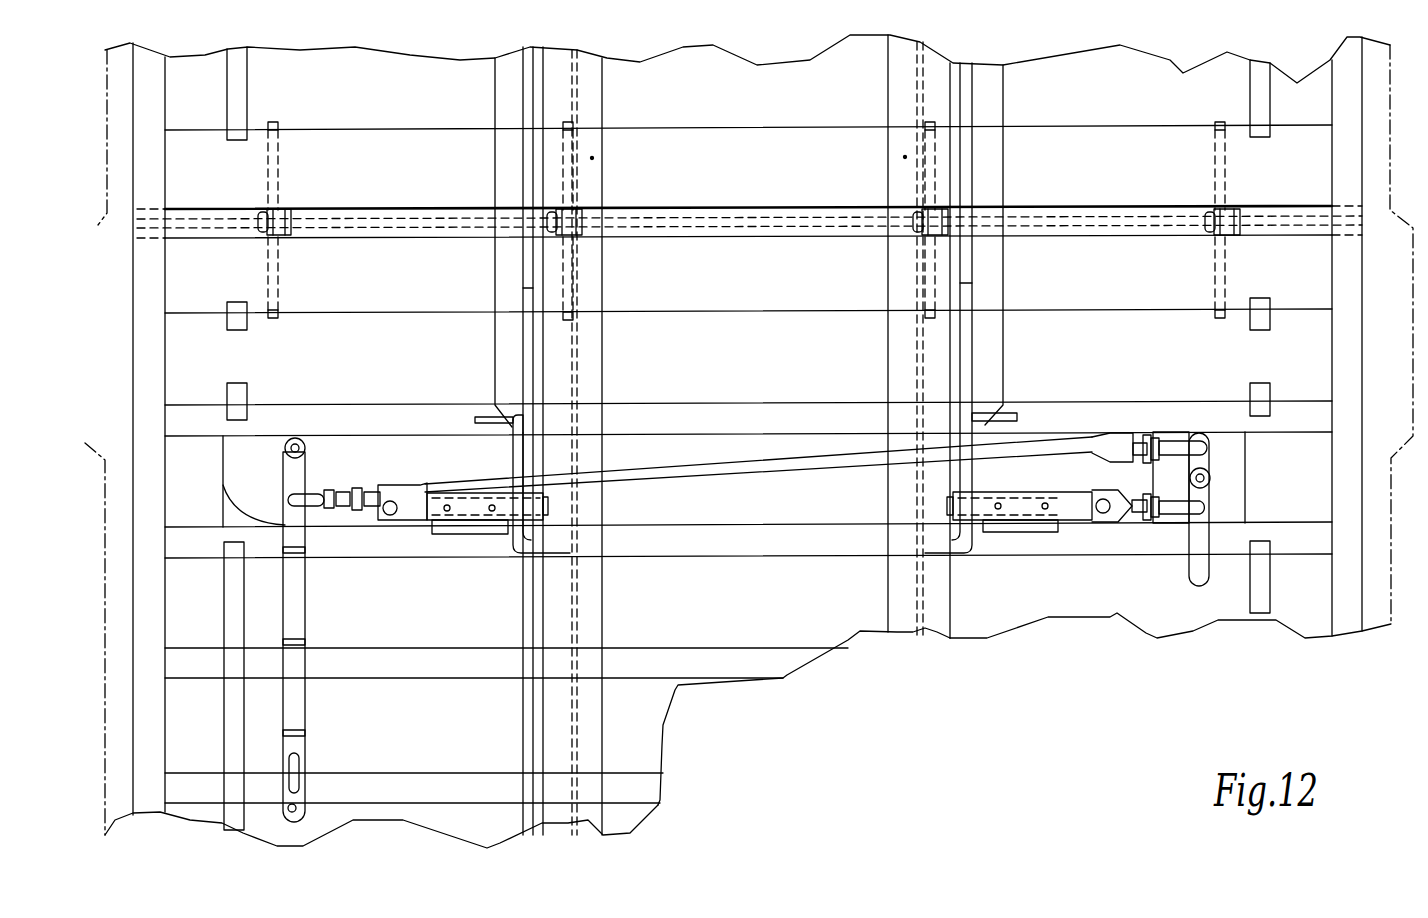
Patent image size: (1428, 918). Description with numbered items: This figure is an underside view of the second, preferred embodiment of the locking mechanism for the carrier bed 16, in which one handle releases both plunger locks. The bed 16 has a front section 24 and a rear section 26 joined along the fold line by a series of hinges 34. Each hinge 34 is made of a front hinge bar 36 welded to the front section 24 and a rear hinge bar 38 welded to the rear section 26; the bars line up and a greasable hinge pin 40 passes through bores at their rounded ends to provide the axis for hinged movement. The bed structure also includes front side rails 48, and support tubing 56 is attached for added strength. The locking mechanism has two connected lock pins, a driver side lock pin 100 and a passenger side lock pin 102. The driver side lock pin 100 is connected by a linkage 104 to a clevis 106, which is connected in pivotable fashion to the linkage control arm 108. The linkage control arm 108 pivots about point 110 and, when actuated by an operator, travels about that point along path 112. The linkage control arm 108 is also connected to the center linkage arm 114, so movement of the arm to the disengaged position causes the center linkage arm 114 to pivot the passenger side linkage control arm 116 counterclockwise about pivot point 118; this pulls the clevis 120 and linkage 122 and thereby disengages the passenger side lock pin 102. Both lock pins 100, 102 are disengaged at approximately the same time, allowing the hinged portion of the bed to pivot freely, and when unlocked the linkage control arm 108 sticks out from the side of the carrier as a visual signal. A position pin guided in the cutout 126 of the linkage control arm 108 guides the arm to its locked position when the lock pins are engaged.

The bed 16 is at (667, 712).
The front section of bed 24 is at (1355, 413).
The rear section of bed 26 is at (1355, 128).
The hinges 34 is at (250, 178).
The front hinge bar 36 is at (283, 272).
The rear hinge bar 38 is at (280, 190).
The greasable hinge pin 40 is at (263, 212).
The front side rails 48 is at (152, 364).
The support tubing 56 is at (742, 412).
The driver side lock pin 100 is at (485, 507).
The passenger side lock pin 102 is at (1018, 507).
The linkage 104 is at (417, 507).
The clevis 106 is at (333, 500).
The linkage control arm 108 is at (293, 583).
The pivot point 110 is at (298, 437).
The path 112 is at (247, 502).
The center linkage arm 114 is at (778, 470).
The passenger side linkage control arm 116 is at (1200, 563).
The pivot point 118 is at (1210, 478).
The clevis 120 is at (1177, 513).
The linkage 122 is at (1082, 508).
The cutout 126 is at (296, 765).